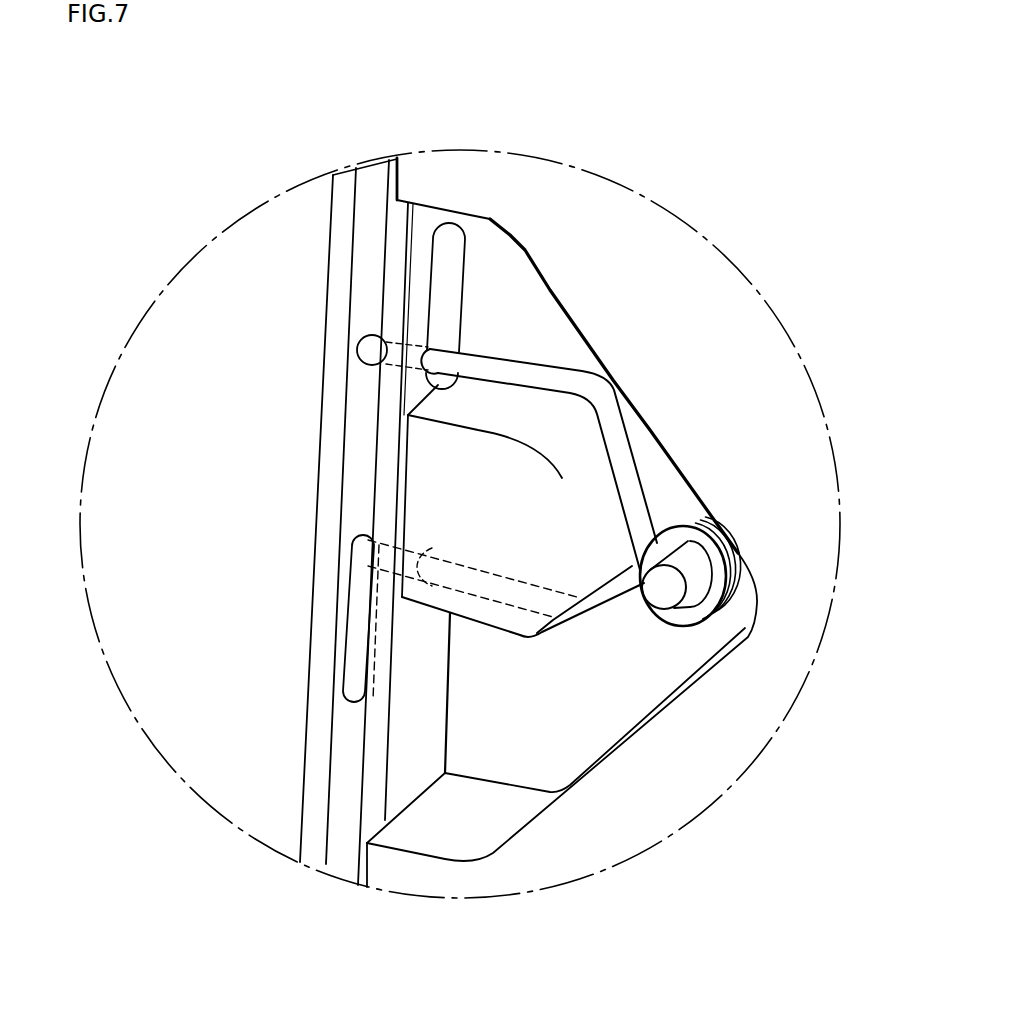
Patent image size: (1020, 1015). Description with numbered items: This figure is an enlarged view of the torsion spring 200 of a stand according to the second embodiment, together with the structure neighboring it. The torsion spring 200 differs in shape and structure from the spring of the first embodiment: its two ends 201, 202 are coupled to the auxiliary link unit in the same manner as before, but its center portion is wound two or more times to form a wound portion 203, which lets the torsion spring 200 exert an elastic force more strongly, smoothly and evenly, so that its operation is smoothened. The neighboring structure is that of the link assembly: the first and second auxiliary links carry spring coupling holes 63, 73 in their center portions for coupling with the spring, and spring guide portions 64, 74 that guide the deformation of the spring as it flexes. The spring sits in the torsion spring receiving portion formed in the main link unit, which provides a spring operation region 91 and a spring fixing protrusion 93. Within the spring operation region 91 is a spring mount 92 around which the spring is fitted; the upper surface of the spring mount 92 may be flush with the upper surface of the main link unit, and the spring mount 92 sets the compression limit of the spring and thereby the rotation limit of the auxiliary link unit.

The spring coupling hole 63 is at (377, 343).
The spring guide portion 64 is at (363, 628).
The spring coupling hole 73 is at (431, 588).
The spring guide portion 74 is at (448, 243).
The spring operation region 91 is at (507, 290).
The spring mount 92 is at (503, 482).
The spring fixing protrusion 93 is at (660, 597).
The torsion spring 200 is at (627, 477).
The end of torsion spring 201 is at (367, 357).
The end of torsion spring 202 is at (362, 546).
The wound portion 203 is at (727, 583).